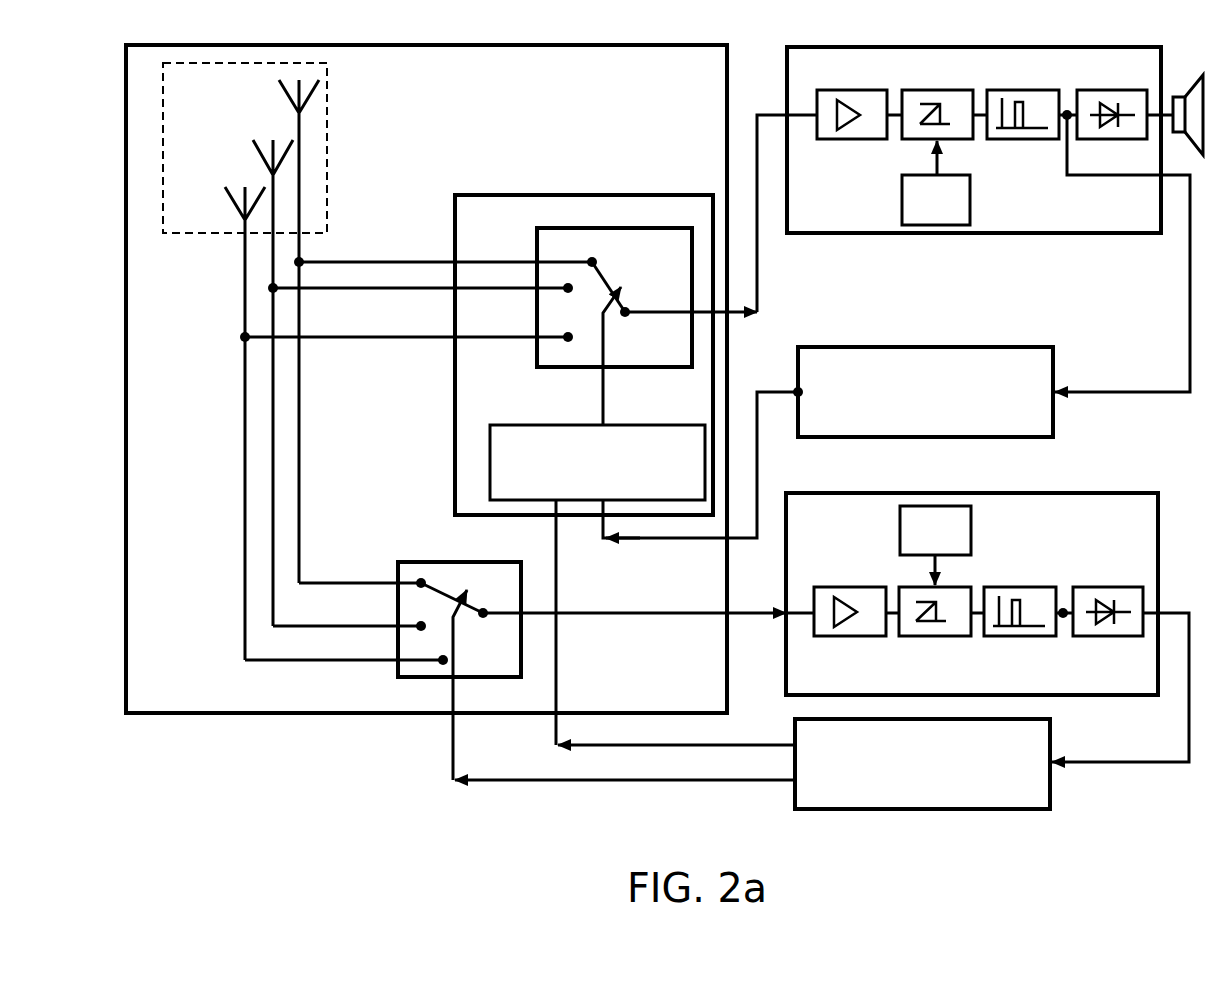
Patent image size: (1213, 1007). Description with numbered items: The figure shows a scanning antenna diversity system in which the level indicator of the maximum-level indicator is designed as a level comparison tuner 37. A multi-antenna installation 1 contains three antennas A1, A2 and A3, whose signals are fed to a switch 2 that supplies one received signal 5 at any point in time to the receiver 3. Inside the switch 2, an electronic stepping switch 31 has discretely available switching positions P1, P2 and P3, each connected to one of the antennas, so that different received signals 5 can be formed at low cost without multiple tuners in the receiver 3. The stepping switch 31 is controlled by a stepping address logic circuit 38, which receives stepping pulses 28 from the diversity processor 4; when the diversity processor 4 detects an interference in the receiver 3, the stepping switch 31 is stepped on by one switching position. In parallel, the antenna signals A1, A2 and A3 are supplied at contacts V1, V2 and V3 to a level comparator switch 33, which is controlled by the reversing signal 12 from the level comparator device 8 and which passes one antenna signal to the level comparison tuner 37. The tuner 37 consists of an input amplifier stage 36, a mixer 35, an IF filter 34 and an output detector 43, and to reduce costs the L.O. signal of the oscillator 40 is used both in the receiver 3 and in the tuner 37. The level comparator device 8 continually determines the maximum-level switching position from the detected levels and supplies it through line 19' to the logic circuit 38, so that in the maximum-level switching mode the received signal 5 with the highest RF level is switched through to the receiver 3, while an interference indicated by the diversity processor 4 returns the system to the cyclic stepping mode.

The multi-antenna installation 1 is at (727, 101).
The switch 2 is at (522, 194).
The receiver 3 is at (827, 233).
The diversity processor 4 is at (932, 347).
The received signal 5 is at (757, 255).
The level comparator device 8 is at (920, 810).
The reversing signal 12 is at (540, 782).
The line 19' is at (675, 622).
The stepping pulses 28 is at (707, 540).
The electronic stepping switch 31 is at (692, 281).
The level comparator switch 33 is at (459, 671).
The IF filter 34 is at (1021, 637).
The mixer 35 is at (934, 637).
The input amplifier stage 36 is at (852, 637).
The level comparison tuner 37 is at (1158, 543).
The stepping address logic circuit 38 is at (490, 470).
The oscillator 40 is at (935, 363).
The output detector 43 is at (1111, 637).
The antenna A1 is at (236, 204).
The antenna A2 is at (263, 157).
The antenna A3 is at (288, 105).
The switching position P1 is at (566, 340).
The switching position P2 is at (566, 289).
The switching position P3 is at (588, 262).
The contact V1 is at (446, 658).
The contact V2 is at (420, 622).
The contact V3 is at (420, 577).